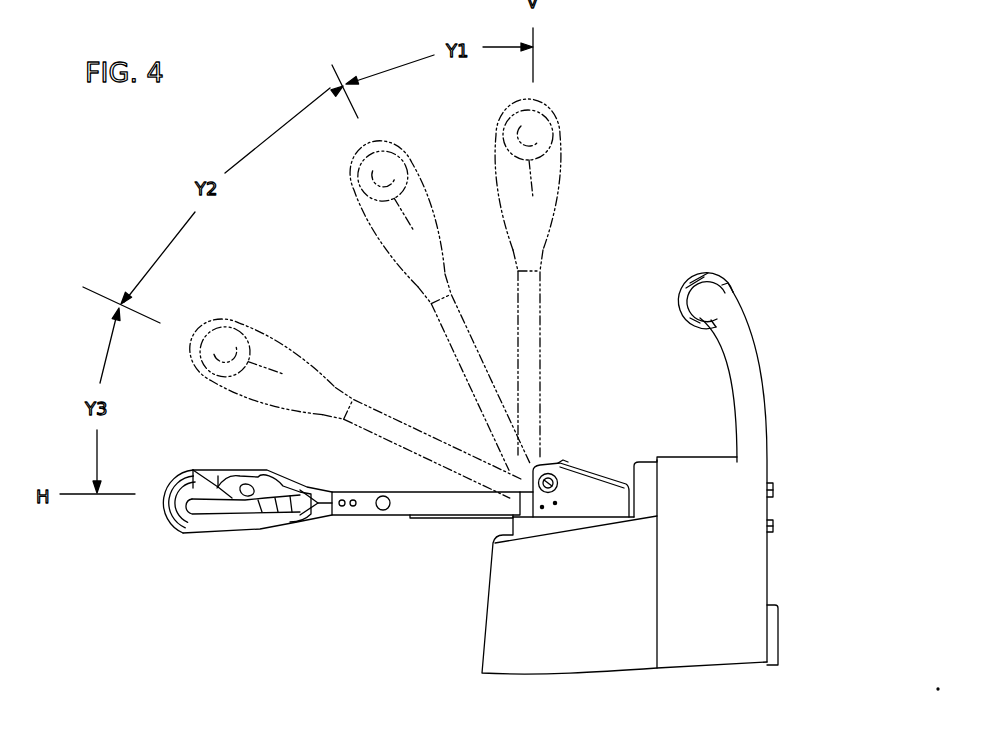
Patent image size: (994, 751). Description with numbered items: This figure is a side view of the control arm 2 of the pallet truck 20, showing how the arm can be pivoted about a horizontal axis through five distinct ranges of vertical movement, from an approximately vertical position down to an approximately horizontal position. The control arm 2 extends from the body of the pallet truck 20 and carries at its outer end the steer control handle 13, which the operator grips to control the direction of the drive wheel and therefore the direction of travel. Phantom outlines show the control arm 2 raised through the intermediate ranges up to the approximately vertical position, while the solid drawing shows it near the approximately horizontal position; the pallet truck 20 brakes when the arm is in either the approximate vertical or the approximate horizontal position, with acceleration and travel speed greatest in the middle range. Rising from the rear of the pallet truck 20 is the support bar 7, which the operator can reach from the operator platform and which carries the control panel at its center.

The control arm 2 is at (402, 518).
The support bar 7 is at (752, 330).
The steer control handle 13 is at (185, 540).
The pallet truck 20 is at (772, 547).